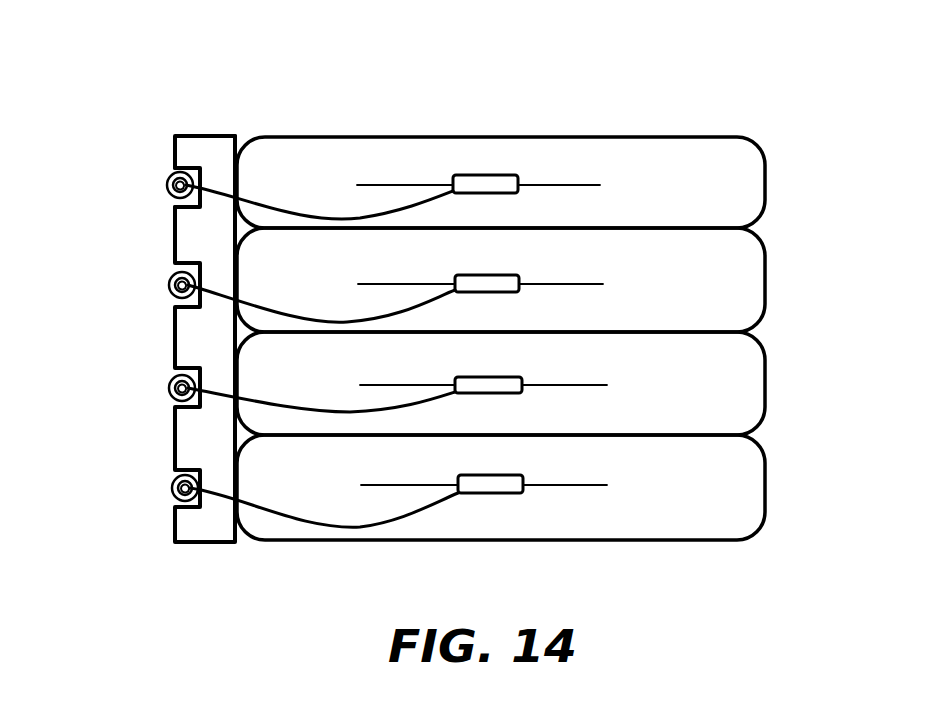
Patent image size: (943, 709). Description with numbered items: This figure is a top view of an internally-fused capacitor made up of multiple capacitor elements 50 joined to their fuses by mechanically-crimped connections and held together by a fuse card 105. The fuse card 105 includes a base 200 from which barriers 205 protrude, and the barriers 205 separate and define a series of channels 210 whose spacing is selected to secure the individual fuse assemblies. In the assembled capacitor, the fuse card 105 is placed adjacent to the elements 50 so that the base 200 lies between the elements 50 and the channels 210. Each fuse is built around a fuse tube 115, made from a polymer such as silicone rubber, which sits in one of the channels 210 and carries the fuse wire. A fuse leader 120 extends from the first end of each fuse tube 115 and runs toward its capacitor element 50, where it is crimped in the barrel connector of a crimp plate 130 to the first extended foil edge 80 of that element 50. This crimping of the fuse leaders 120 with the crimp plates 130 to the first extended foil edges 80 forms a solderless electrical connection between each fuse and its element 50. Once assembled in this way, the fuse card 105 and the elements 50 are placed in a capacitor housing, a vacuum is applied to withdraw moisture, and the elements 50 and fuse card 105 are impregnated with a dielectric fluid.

The capacitor element 50 is at (548, 148).
The first extended foil edge 80 is at (600, 185).
The fuse card 105 is at (210, 150).
The fuse tube 115 is at (165, 188).
The fuse leader 120 is at (278, 405).
The crimp plate 130 is at (470, 176).
The base 200 is at (195, 152).
The barrier 205 is at (170, 147).
The channel 210 is at (160, 173).